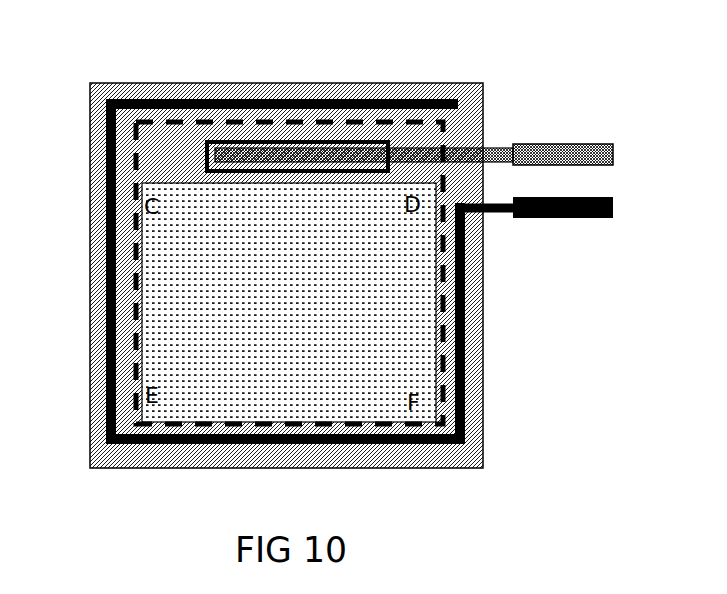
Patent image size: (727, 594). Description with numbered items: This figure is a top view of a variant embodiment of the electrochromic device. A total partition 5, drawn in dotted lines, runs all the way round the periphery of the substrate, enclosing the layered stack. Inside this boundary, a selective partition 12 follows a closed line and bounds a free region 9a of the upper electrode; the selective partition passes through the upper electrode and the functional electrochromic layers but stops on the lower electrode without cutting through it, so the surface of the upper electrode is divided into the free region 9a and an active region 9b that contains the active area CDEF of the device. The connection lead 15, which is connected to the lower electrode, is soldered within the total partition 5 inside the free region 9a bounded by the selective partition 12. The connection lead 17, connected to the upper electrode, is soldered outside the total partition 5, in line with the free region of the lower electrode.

The total partition 5 is at (134, 150).
The free region 9a is at (213, 148).
The active region 9b is at (228, 455).
The selective partition 12 is at (316, 142).
The connection lead 15 is at (538, 147).
The connection lead 17 is at (568, 218).